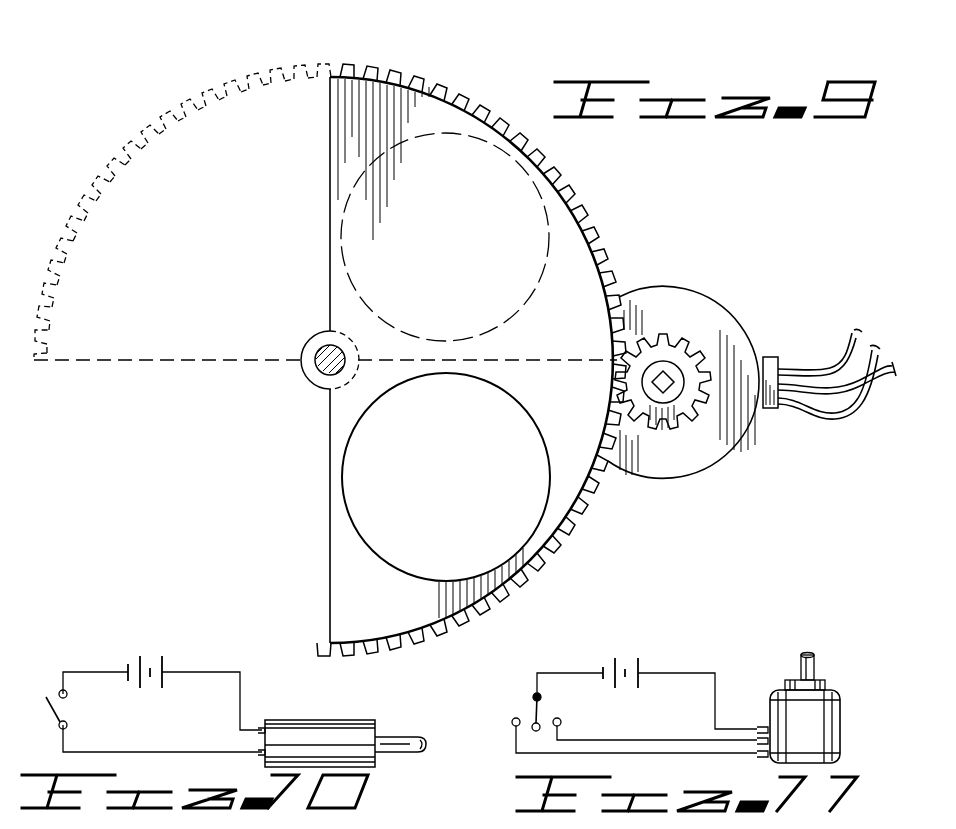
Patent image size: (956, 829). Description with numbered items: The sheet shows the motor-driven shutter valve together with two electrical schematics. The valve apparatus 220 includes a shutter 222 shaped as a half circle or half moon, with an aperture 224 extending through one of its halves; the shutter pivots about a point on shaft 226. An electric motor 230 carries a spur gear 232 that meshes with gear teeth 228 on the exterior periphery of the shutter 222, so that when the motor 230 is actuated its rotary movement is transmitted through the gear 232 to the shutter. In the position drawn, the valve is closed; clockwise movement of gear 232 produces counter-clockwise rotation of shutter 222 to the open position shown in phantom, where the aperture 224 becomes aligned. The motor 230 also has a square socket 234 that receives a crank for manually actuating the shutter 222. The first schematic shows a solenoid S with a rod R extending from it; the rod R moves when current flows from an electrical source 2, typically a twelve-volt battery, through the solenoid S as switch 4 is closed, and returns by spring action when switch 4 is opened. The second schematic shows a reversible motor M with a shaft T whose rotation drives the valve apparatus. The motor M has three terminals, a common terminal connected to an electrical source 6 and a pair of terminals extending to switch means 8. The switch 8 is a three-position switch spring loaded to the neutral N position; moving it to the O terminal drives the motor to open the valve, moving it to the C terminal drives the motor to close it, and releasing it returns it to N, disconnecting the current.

In FIG. 9, the valve apparatus 220 is at (618, 216).
In FIG. 9, the shutter 222 is at (437, 100).
In FIG. 9, the aperture 224 is at (520, 545).
In FIG. 9, the shaft 226 is at (318, 372).
In FIG. 9, the gear teeth 228 is at (589, 505).
In FIG. 9, the electric motor 230 is at (718, 462).
In FIG. 9, the gear 232 is at (653, 426).
In FIG. 9, the square socket 234 is at (672, 372).
In FIG. 10, the electrical source 2 is at (163, 669).
In FIG. 10, the switch 4 is at (53, 712).
In FIG. 10, the solenoid S is at (355, 720).
In FIG. 10, the rod R is at (420, 735).
In FIG. 11, the electrical source 6 is at (639, 668).
In FIG. 11, the switch means 8 is at (534, 697).
In FIG. 11, the neutral position N is at (546, 707).
In FIG. 11, the O terminal O is at (511, 722).
In FIG. 11, the C terminal C is at (562, 722).
In FIG. 11, the motor M is at (770, 710).
In FIG. 11, the shaft T is at (814, 665).